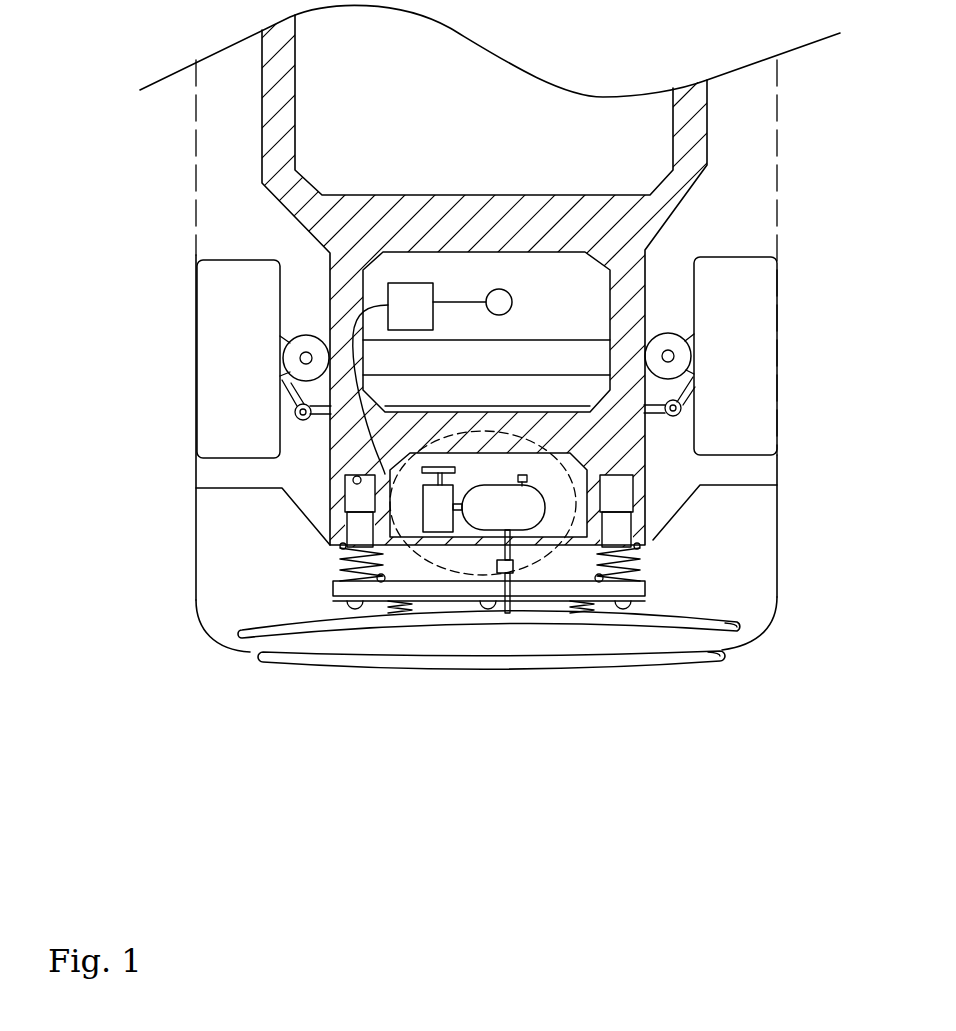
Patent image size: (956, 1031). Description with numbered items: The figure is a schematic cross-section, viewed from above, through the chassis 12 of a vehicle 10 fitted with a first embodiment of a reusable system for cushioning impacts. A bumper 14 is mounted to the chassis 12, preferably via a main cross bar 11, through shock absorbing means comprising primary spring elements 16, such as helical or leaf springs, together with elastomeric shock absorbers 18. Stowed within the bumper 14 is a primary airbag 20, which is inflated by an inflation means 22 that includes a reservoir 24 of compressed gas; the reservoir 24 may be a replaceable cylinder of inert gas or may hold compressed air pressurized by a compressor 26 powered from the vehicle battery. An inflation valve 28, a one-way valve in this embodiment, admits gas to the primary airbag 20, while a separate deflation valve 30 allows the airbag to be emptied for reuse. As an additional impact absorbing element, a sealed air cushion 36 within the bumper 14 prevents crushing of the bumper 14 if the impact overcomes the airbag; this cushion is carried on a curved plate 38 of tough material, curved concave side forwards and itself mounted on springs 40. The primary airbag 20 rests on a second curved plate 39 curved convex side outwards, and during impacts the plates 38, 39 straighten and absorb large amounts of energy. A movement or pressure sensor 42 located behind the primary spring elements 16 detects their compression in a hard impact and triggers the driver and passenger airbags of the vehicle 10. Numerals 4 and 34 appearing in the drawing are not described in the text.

The tank 4 is at (530, 497).
The vehicle 10 is at (178, 358).
The main cross bar 11 is at (632, 587).
The chassis 12 is at (412, 212).
The bumper 14 is at (263, 692).
The primary spring elements 16 is at (643, 557).
The elastomeric shock absorbers 18 is at (650, 600).
The primary airbag 20 is at (613, 660).
The inflation means 22 is at (499, 299).
The reservoir 24 is at (522, 475).
The compressor 26 is at (439, 508).
The inflation valve 28 is at (498, 567).
The deflation valve 30 is at (350, 654).
The control unit 34 is at (410, 293).
The sealed air cushion 36 is at (748, 633).
The curved plate 38 is at (738, 623).
The second curved plate 39 is at (747, 651).
The springs 40 is at (416, 614).
The movement or pressure sensor 42 is at (357, 482).